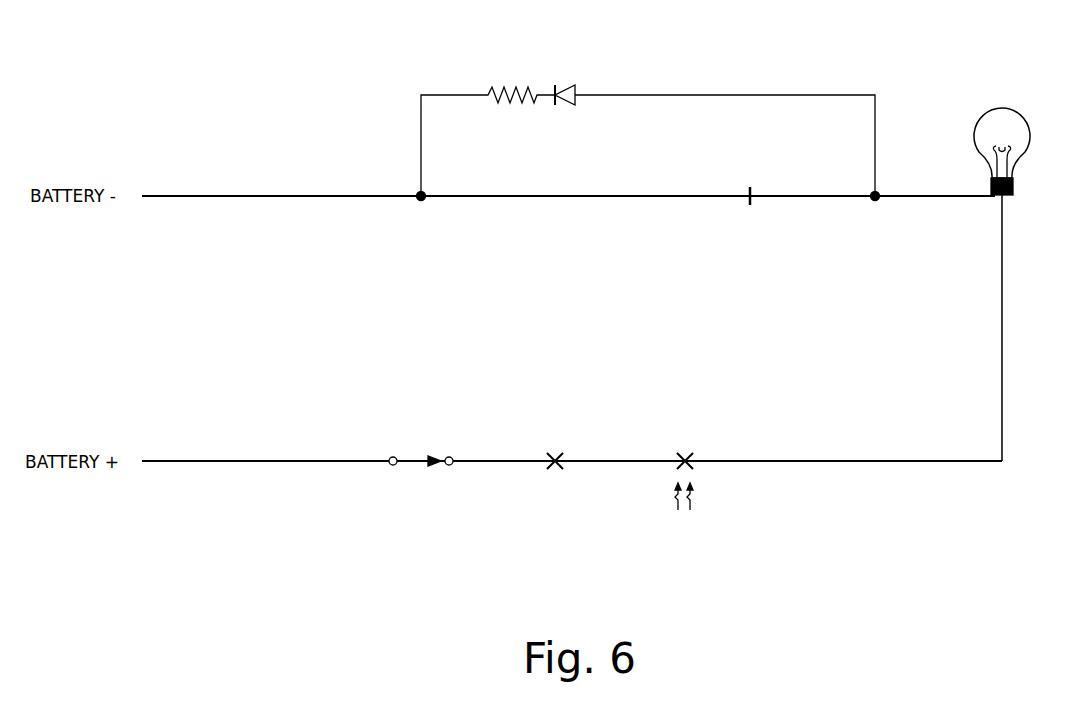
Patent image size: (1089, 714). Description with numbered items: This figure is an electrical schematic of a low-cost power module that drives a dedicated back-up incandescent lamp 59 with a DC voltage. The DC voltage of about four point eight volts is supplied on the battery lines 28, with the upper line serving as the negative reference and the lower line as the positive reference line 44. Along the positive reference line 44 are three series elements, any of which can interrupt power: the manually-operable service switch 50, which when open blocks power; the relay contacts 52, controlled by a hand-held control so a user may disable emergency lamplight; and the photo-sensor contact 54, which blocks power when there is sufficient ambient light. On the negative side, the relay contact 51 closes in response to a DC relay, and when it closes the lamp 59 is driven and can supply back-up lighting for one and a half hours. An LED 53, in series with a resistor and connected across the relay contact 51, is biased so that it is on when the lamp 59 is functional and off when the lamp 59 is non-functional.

The lines 28 is at (275, 180).
The positive reference line 44 is at (252, 460).
The service switch 50 is at (404, 458).
The relay contact 51 is at (753, 190).
The relay contacts 52 is at (553, 470).
The LED 53 is at (527, 75).
The photo-sensor contact 54 is at (680, 455).
The incandescent lamp 59 is at (1030, 122).